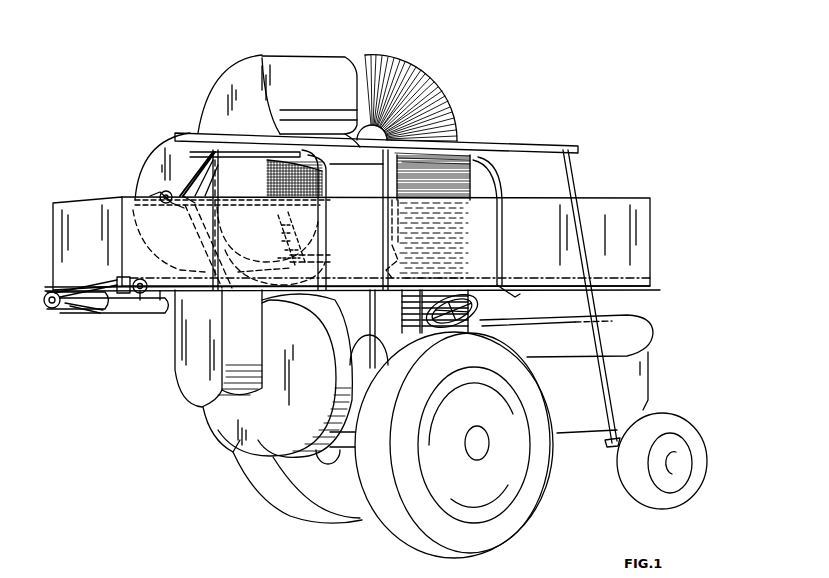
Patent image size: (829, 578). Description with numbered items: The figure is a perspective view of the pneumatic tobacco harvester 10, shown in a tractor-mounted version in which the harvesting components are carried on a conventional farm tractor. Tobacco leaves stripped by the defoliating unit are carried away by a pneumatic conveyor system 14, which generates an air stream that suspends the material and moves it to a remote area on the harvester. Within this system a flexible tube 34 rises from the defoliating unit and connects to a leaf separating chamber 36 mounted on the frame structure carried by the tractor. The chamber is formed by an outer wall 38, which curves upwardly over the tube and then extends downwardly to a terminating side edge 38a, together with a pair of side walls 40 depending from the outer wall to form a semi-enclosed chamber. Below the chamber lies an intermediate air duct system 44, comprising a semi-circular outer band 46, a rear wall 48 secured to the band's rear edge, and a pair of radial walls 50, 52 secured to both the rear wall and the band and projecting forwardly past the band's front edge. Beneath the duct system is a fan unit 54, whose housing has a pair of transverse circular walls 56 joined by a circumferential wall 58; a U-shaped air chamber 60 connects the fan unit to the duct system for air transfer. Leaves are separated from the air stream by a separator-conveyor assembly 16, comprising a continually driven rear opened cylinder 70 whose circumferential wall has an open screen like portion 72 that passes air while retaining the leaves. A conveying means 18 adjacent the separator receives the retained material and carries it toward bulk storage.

The pneumatic tobacco harvester 10 is at (665, 354).
The pneumatic conveyor system 14 is at (176, 108).
The separator-conveyor assembly 16 is at (326, 230).
The conveying means 18 is at (347, 296).
The flexible tube 34 is at (438, 105).
The leaf separating chamber 36 is at (256, 44).
The outer wall 38 is at (308, 68).
The side edge 38a is at (338, 143).
The side walls 40 is at (240, 85).
The intermediate air duct system 44 is at (119, 179).
The semi-circular outer band 46 is at (213, 150).
The rear wall 48 is at (160, 150).
The radial wall 50 is at (277, 178).
The radial wall 52 is at (271, 246).
The fan unit 54 is at (203, 445).
The transverse circular walls 56 is at (250, 448).
The circumferential wall 58 is at (300, 448).
The U-shaped air chamber 60 is at (192, 350).
The rear opened cylinder 70 is at (422, 220).
The open screen like portion 72 is at (312, 163).